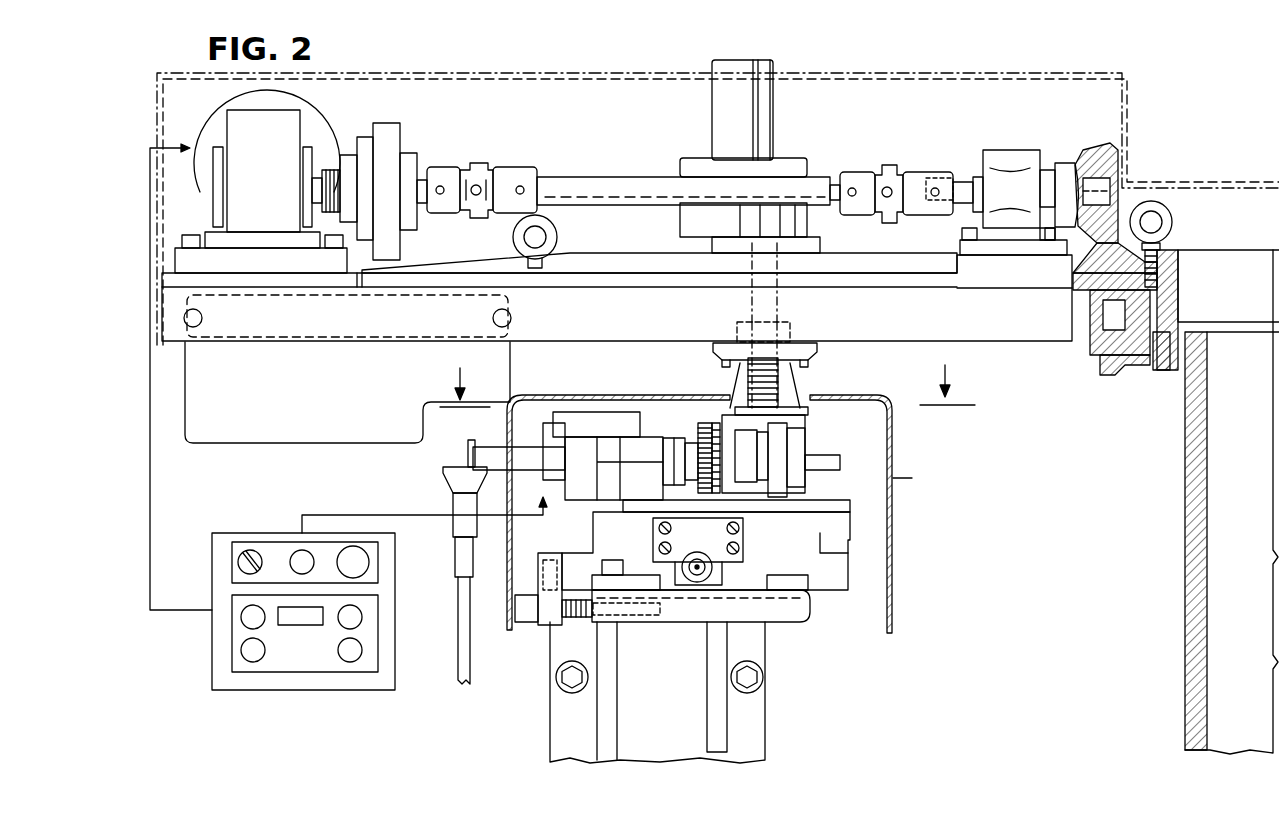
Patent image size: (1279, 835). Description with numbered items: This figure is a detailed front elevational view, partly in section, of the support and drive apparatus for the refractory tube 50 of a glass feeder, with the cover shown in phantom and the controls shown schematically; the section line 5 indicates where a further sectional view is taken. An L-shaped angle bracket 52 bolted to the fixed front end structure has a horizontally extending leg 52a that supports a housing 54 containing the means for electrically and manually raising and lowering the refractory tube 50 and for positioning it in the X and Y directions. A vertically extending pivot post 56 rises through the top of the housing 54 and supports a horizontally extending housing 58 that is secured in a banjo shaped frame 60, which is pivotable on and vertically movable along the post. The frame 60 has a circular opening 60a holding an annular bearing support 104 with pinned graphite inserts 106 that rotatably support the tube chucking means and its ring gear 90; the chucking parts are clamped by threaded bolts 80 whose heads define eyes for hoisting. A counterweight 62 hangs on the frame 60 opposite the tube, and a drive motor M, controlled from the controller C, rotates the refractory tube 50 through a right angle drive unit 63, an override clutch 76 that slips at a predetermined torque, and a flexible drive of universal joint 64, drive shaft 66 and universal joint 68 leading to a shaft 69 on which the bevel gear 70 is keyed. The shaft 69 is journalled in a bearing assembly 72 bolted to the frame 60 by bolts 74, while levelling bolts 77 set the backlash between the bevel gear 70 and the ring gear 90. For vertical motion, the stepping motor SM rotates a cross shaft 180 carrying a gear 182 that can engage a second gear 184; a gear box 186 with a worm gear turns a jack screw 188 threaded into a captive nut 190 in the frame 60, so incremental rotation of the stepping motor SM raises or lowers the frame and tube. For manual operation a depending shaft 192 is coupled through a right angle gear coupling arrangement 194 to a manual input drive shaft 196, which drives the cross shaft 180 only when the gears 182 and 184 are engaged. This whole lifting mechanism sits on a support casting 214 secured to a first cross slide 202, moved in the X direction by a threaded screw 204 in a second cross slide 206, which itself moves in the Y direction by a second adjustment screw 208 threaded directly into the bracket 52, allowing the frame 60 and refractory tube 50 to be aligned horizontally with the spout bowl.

The refractory tube 50 is at (1185, 589).
The angle bracket 52 is at (760, 730).
The horizontally extending leg 52a is at (793, 623).
The housing 54 is at (905, 528).
The pivot post 56 is at (722, 107).
The horizontally extending housing 58 is at (535, 70).
The banjo shaped frame 60 is at (958, 330).
The circular opening 60a is at (1137, 353).
The counterweight 62 is at (340, 404).
The right angle drive unit 63 is at (261, 191).
The universal joint 64 is at (500, 175).
The drive shaft 66 is at (592, 187).
The universal joint 68 is at (865, 178).
The shaft 69 is at (965, 177).
The bevel gear 70 is at (1097, 160).
The bearing assembly 72 is at (1007, 160).
The bolts 74 is at (963, 233).
The override clutch 76 is at (388, 125).
The levelling bolts 77 is at (1050, 242).
The threaded bolts 80 is at (1157, 207).
The ring gear 90 is at (1083, 223).
The annular bearing support 104 is at (1097, 348).
The graphite inserts 106 is at (1122, 312).
The cross shaft 180 is at (818, 463).
The gear 182 is at (705, 425).
The second gear 184 is at (717, 425).
The gear box 186 is at (930, 474).
The jack screw 188 is at (757, 387).
The captive nut 190 is at (797, 353).
The depending shaft 192 is at (463, 658).
The right angle gear coupling arrangement 194 is at (445, 456).
The manual input drive shaft 196 is at (522, 453).
The first cross slide 202 is at (795, 534).
The threaded screw 204 is at (697, 568).
The second cross slide 206 is at (793, 612).
The second adjustment screw 208 is at (522, 607).
The support casting 214 is at (840, 508).
The drive motor M is at (340, 103).
The controller C is at (256, 522).
The stepping motor SM is at (582, 427).
The section line 5 is at (707, 400).